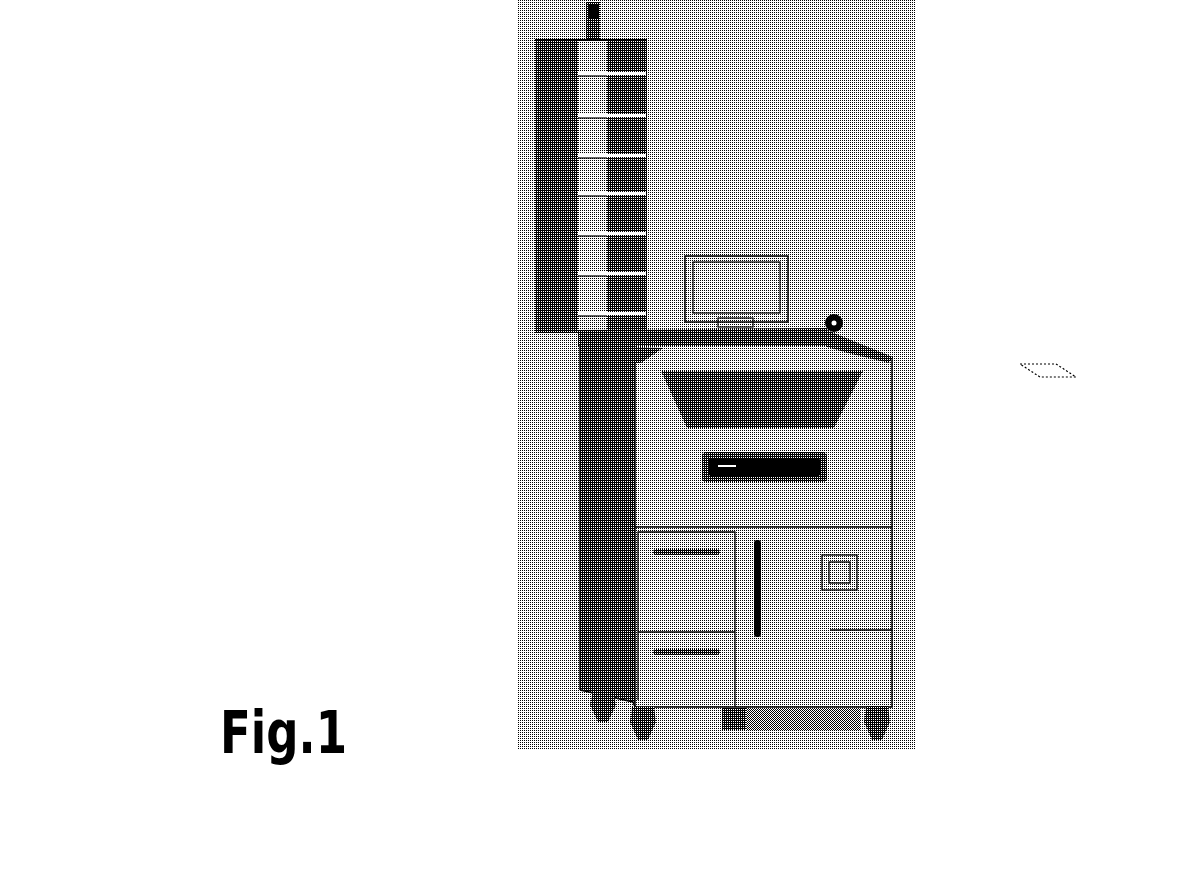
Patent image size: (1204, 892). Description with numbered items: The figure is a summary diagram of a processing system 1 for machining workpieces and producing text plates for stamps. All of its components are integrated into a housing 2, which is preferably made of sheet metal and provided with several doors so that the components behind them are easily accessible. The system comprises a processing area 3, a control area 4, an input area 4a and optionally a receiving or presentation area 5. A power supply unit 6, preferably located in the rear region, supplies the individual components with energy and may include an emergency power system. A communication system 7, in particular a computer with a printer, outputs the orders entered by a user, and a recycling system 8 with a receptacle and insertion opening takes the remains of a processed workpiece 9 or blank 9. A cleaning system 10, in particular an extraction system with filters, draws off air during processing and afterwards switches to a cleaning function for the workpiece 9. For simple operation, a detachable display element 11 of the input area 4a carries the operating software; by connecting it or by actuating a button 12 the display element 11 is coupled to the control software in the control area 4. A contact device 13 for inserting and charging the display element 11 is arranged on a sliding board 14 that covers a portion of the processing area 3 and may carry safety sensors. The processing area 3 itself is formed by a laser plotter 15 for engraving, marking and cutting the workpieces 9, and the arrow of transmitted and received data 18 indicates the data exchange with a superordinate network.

The processing system 1 is at (1030, 190).
The housing 2 is at (585, 437).
The processing area 3 is at (645, 346).
The control area 4 is at (580, 660).
The input area 4a is at (783, 215).
The receiving area 5 is at (488, 123).
The power supply unit 6 is at (578, 590).
The communication system 7 is at (578, 528).
The recycling system 8 is at (885, 487).
The workpiece 9 is at (1058, 368).
The cleaning system 10 is at (885, 625).
The display element 11 is at (758, 282).
The button 12 is at (773, 318).
The contact device 13 is at (880, 350).
The sliding board 14 is at (882, 320).
The laser plotter 15 is at (880, 432).
The data 18 is at (583, 393).